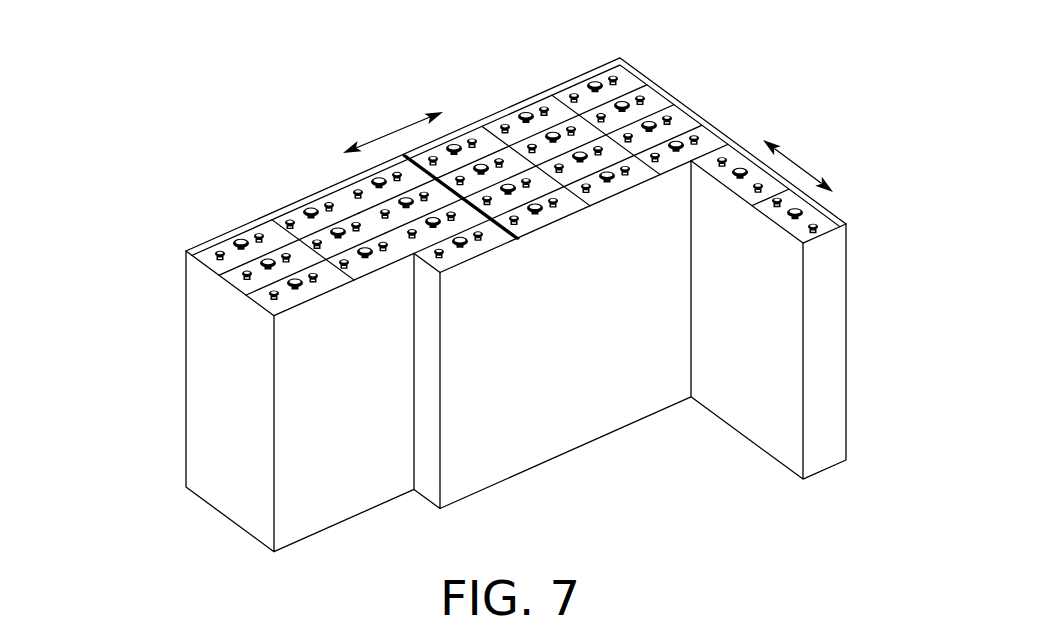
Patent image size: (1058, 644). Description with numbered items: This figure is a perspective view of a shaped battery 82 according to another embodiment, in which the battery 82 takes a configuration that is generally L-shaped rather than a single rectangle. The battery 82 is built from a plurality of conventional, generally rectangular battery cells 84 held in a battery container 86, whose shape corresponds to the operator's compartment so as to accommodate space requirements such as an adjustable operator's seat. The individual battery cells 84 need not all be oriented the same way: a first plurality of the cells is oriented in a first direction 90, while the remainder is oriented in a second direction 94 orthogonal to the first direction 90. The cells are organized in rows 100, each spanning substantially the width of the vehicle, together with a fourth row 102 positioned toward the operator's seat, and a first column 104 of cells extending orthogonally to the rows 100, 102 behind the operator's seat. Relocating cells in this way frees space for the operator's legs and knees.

The shaped battery 82 is at (142, 342).
The battery cells 84 is at (250, 232).
The battery container 86 is at (847, 224).
The first direction 90 is at (391, 132).
The second direction 94 is at (792, 162).
The rows 100 is at (664, 62).
The fourth row 102 is at (757, 122).
The first column 104 is at (853, 196).